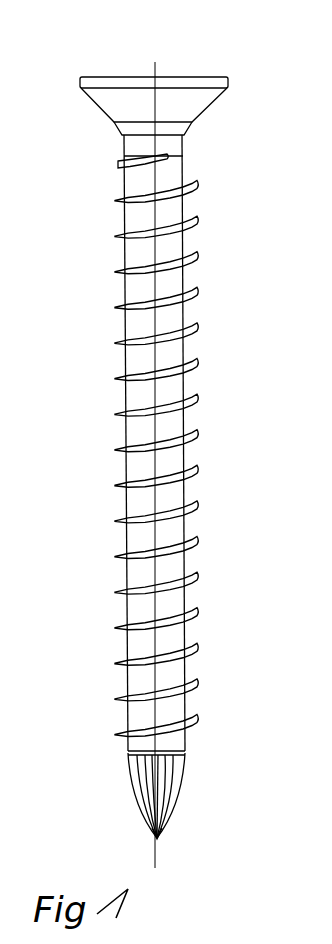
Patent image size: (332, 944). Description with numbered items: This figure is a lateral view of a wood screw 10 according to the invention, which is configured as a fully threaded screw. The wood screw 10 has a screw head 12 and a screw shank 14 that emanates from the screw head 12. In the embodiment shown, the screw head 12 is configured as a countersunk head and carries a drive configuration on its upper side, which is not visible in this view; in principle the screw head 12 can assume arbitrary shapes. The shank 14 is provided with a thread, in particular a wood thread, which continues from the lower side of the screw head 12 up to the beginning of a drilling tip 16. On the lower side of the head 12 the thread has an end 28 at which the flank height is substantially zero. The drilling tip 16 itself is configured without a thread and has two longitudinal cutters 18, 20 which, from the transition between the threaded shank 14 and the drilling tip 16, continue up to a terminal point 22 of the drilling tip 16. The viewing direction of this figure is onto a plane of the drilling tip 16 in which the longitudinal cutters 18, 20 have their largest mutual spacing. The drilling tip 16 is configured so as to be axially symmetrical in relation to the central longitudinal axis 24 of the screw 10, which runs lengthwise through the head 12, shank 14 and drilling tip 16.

The wood screw 10 is at (165, 479).
The screw head 12 is at (200, 98).
The screw shank 14 is at (173, 418).
The drilling tip 16 is at (148, 812).
The longitudinal cutter 18 is at (133, 786).
The longitudinal cutter 20 is at (173, 798).
The terminal point 22 is at (158, 842).
The central longitudinal axis 24 is at (160, 562).
The end of the thread 28 is at (163, 158).